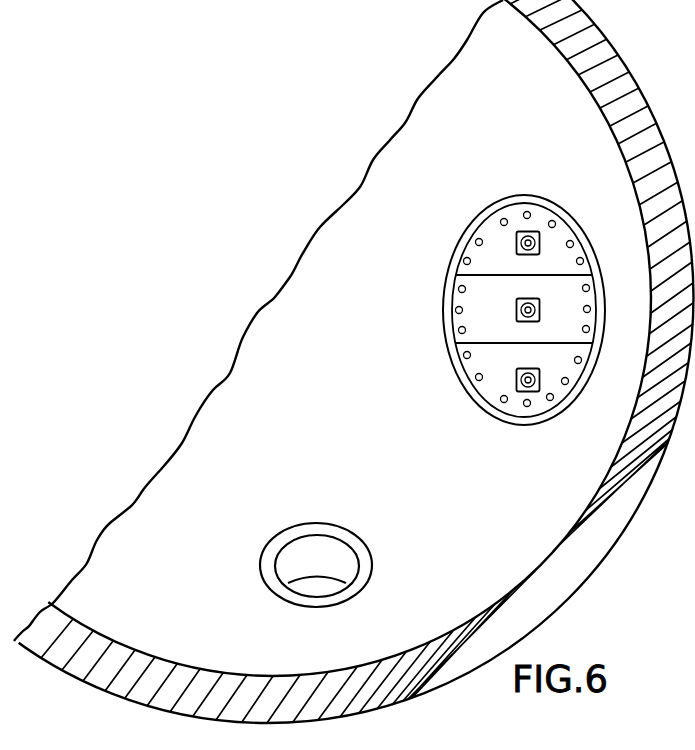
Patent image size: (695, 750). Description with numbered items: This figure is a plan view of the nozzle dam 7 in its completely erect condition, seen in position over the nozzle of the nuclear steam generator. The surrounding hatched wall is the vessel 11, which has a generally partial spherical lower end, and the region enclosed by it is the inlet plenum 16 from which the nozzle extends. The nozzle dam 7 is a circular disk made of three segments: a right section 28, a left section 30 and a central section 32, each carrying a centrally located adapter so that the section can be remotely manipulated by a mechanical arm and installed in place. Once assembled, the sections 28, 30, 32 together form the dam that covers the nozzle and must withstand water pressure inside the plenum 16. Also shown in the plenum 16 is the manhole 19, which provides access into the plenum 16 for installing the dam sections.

The vessel 11 is at (620, 52).
The inlet plenum 16 is at (317, 416).
The nozzle dam 7 is at (501, 291).
The right section 28 is at (496, 260).
The central section 32 is at (485, 311).
The left section 30 is at (497, 380).
The manhole 19 is at (292, 558).